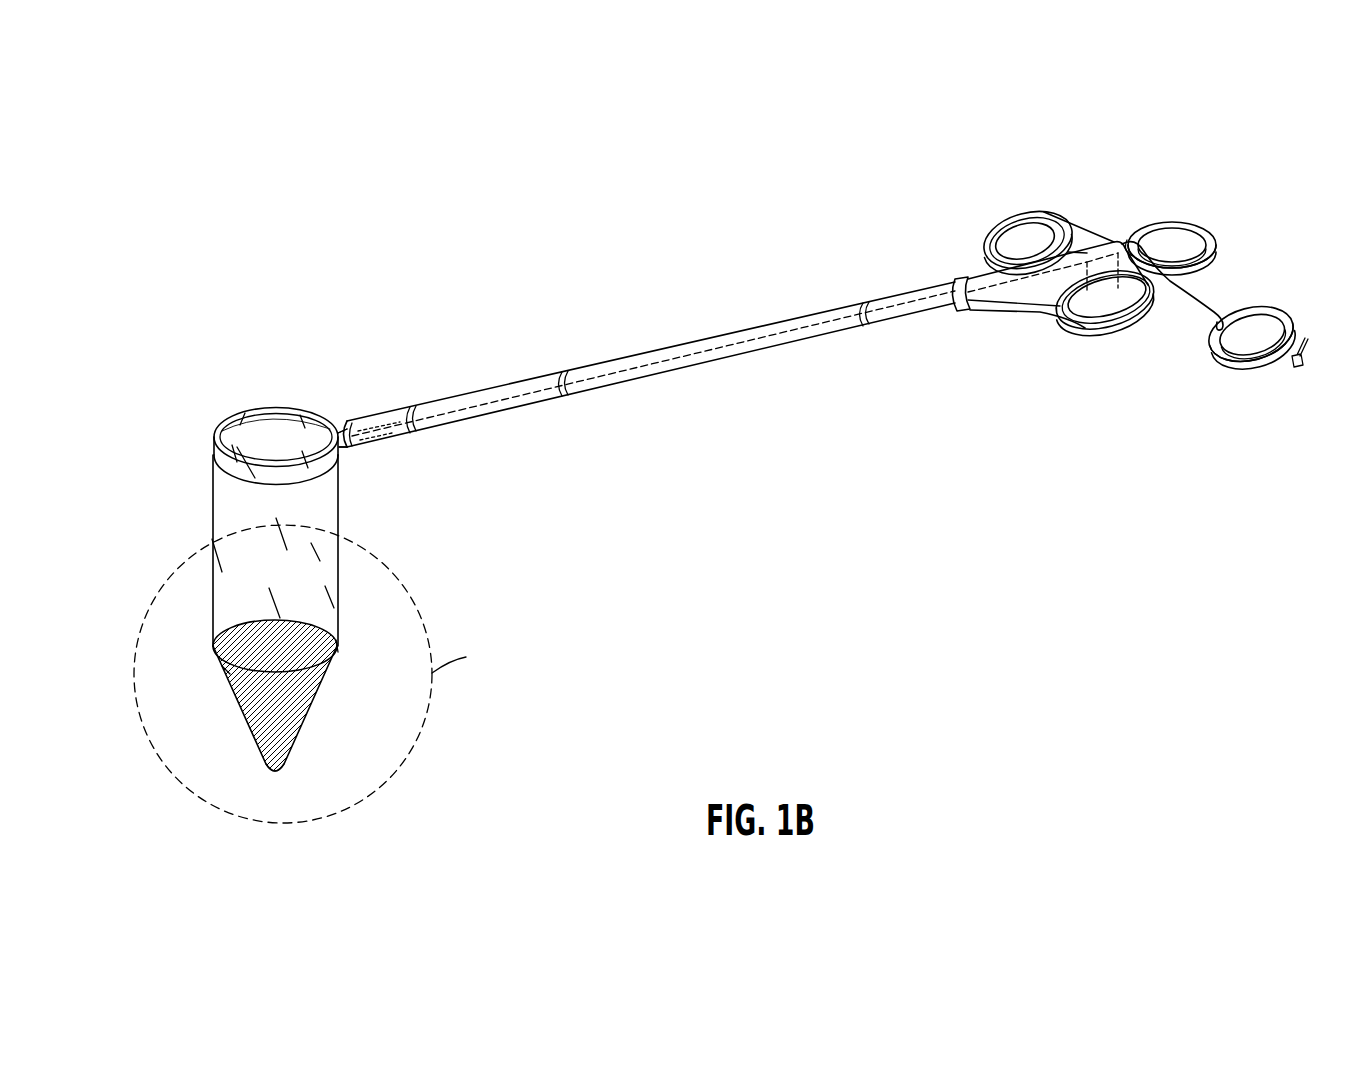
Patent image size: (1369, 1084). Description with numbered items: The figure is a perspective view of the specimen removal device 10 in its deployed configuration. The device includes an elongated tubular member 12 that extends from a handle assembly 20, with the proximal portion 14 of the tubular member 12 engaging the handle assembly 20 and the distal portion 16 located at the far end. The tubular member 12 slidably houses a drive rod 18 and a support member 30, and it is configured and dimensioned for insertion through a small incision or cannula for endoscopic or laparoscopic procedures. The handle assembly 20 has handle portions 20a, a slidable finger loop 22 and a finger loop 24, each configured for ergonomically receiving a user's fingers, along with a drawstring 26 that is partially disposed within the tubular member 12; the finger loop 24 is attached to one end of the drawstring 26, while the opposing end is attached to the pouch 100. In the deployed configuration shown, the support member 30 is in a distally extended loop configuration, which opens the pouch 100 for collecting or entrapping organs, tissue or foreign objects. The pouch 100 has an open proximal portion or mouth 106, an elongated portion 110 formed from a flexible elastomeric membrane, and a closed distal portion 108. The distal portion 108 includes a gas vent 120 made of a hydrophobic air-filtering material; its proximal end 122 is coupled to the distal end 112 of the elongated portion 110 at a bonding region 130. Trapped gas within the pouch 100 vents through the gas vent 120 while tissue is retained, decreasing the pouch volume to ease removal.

The specimen removal device 10 is at (532, 228).
The elongated tubular member 12 is at (730, 336).
The proximal portion 14 is at (948, 281).
The distal portion 16 is at (385, 415).
The drive rod 18 is at (515, 392).
The handle assembly 20 is at (1080, 213).
The handle portion 20a is at (1003, 220).
The slidable finger loop 22 is at (1210, 233).
The finger loop 24 is at (1277, 316).
The drawstring 26 is at (1202, 297).
The support member 30 is at (321, 482).
The pouch 100 is at (205, 519).
The open proximal portion or mouth 106 is at (233, 430).
The closed distal portion 108 is at (280, 757).
The elongated portion 110 is at (305, 561).
The distal end 112 is at (334, 636).
The gas vent 120 is at (316, 717).
The proximal end 122 is at (230, 674).
The bonding region 130 is at (340, 649).